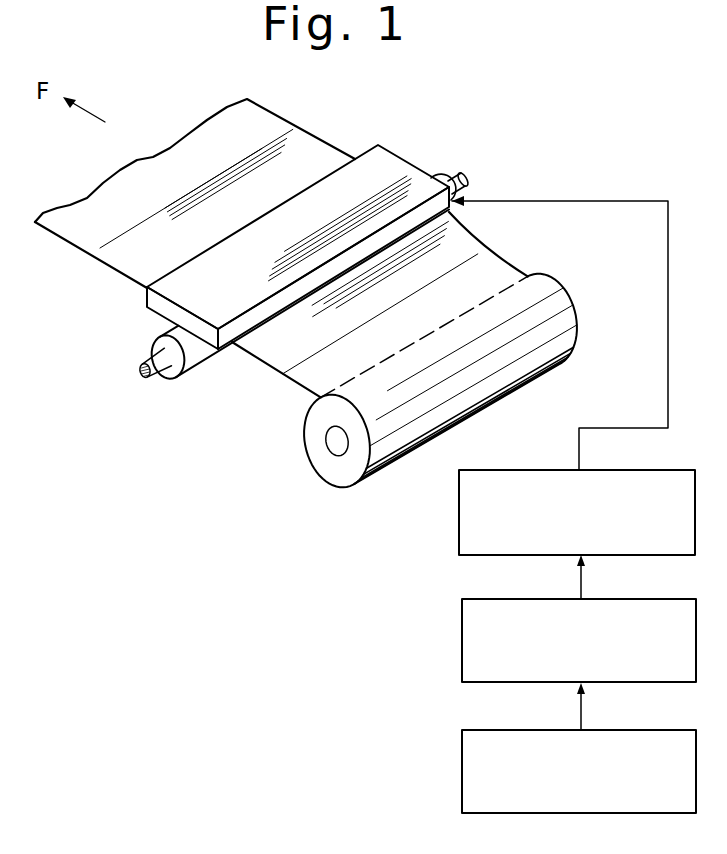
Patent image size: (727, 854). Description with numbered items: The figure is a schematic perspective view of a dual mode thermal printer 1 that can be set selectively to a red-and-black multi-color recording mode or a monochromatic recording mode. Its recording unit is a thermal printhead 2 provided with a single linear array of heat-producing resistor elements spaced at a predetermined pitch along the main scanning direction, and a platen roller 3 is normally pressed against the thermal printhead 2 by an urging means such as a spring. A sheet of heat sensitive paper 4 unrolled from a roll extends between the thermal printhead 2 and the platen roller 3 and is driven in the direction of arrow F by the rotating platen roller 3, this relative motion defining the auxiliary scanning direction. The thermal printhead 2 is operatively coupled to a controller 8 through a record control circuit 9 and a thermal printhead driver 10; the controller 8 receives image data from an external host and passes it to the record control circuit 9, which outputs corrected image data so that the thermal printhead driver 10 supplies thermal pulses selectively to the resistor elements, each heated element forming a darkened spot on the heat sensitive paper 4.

The dual mode thermal printer 1 is at (98, 340).
The thermal printhead 2 is at (147, 290).
The platen roller 3 is at (156, 338).
The heat sensitive paper 4 is at (324, 147).
The controller 8 is at (462, 780).
The record control circuit 9 is at (462, 650).
The thermal printhead driver 10 is at (459, 525).